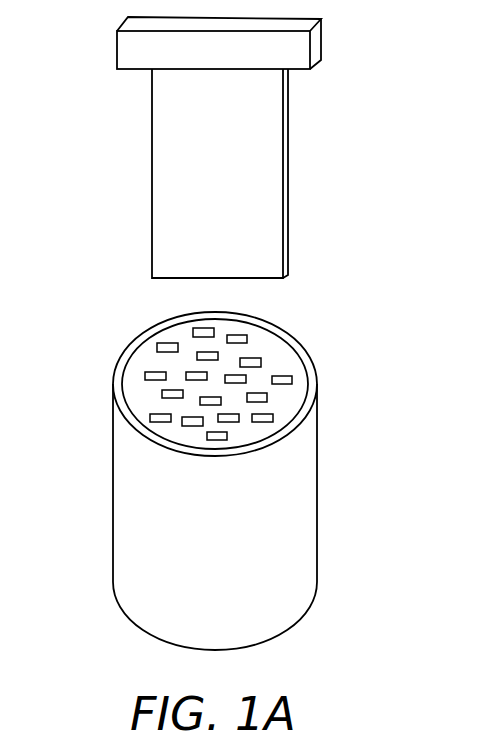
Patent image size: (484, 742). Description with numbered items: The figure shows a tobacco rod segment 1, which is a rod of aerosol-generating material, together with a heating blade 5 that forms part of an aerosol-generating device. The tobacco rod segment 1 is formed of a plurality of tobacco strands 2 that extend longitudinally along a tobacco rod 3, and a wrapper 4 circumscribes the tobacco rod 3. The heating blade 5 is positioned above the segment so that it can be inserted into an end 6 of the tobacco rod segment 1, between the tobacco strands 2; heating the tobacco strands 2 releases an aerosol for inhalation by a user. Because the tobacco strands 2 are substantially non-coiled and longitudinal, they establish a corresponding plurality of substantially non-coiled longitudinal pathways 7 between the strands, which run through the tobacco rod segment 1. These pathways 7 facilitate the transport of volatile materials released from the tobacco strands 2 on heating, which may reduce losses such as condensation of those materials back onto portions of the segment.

The tobacco rod segment 1 is at (326, 270).
The tobacco strands 2 is at (256, 362).
The tobacco rod 3 is at (140, 393).
The wrapper 4 is at (122, 558).
The heating blade 5 is at (163, 160).
The end 6 is at (175, 433).
The pathways 7 is at (192, 347).